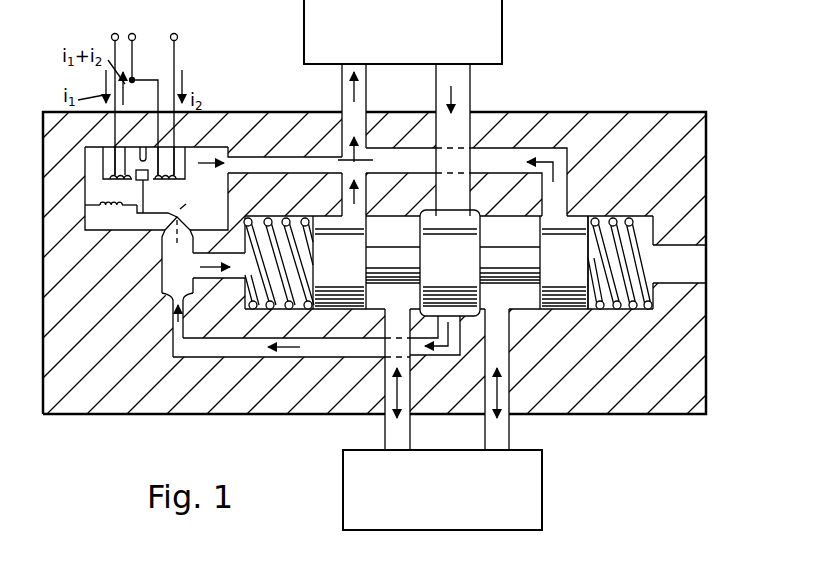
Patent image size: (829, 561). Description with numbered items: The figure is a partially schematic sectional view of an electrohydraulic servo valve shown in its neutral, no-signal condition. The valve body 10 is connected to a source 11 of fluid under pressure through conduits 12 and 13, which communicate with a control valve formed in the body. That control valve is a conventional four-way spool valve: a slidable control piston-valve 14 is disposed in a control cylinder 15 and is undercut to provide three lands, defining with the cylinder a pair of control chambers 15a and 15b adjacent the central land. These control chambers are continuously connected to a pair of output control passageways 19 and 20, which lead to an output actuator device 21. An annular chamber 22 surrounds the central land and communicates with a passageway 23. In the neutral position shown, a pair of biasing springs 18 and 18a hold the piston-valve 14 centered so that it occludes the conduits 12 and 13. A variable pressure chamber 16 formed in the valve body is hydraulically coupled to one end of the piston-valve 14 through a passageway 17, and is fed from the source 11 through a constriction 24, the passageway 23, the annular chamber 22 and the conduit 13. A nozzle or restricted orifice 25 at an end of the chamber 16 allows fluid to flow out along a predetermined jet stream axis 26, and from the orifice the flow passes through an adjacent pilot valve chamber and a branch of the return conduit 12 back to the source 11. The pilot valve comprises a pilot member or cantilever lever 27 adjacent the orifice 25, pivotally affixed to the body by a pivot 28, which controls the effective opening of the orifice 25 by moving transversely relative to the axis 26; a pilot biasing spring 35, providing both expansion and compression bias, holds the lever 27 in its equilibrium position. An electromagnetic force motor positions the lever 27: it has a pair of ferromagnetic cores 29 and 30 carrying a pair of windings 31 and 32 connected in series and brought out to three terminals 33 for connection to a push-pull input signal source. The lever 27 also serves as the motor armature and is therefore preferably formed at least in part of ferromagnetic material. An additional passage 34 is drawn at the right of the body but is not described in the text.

The valve body 10 is at (617, 131).
The source of fluid 11 is at (502, 35).
The conduit 12 is at (343, 99).
The conduit 13 is at (466, 98).
The control piston-valve 14 is at (571, 222).
The control cylinder 15 is at (641, 229).
The control chamber 15a is at (386, 224).
The control chamber 15b is at (522, 224).
The variable pressure chamber 16 is at (162, 251).
The passageway 17 is at (215, 278).
The biasing spring 18 is at (261, 329).
The biasing spring 18a is at (582, 333).
The output control passageway 19 is at (392, 427).
The output control passageway 20 is at (501, 427).
The output actuator device 21 is at (545, 458).
The annular chamber 22 is at (473, 212).
The passageway 23 is at (325, 350).
The constriction 24 is at (162, 299).
The nozzle or restricted orifice 25 is at (183, 217).
The jet stream axis 26 is at (178, 208).
The pilot member or cantilever lever 27 is at (143, 192).
The pivot 28 is at (144, 144).
The ferromagnetic core 29 is at (104, 166).
The ferromagnetic core 30 is at (176, 153).
The winding 31 is at (113, 183).
The winding 32 is at (185, 177).
The terminals 33 is at (174, 35).
The port 34 is at (698, 263).
The pilot biasing spring 35 is at (85, 206).